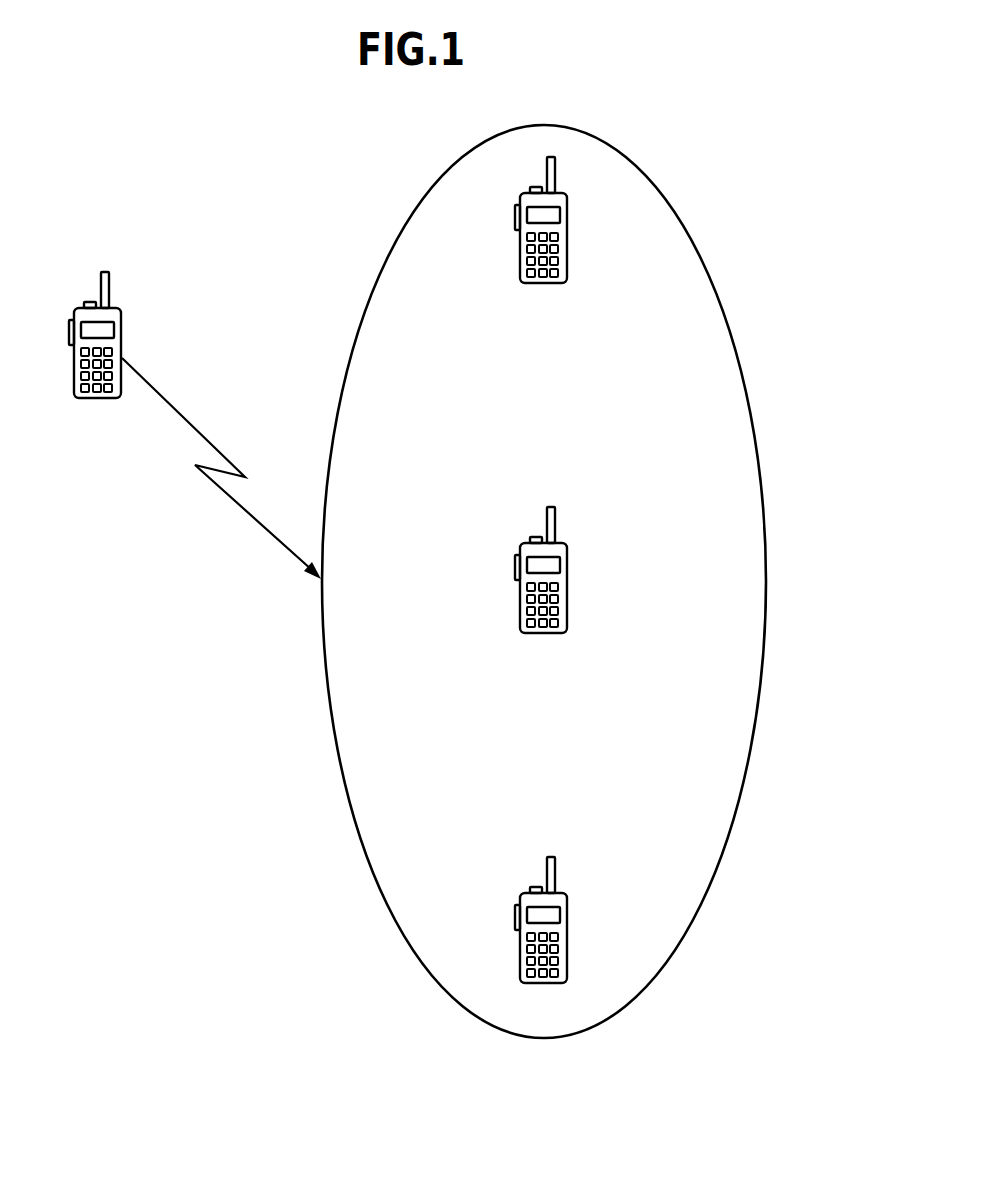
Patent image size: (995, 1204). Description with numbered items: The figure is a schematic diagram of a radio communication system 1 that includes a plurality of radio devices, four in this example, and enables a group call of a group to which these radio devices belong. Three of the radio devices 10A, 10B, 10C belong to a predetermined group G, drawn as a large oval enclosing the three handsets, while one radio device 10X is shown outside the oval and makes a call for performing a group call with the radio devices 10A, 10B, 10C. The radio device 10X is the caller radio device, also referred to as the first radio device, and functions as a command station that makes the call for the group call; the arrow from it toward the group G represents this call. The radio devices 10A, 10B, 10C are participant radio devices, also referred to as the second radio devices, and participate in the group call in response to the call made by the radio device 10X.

The radio communication system 1 is at (252, 178).
The predetermined group G is at (366, 312).
The caller radio device 10X is at (92, 398).
The participant radio device 10A is at (567, 257).
The participant radio device 10B is at (567, 609).
The participant radio device 10C is at (567, 905).